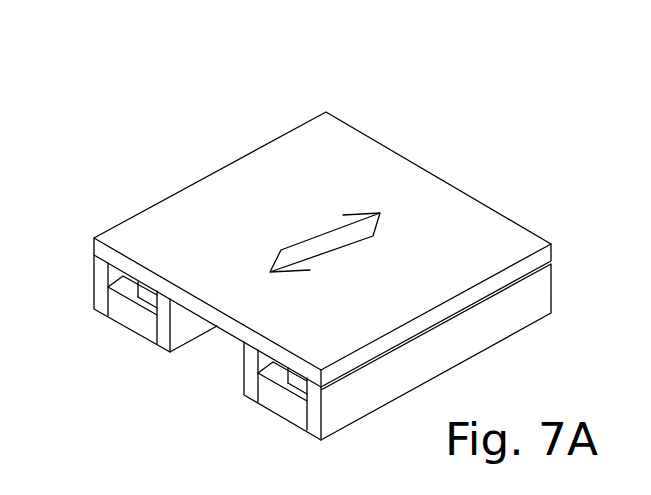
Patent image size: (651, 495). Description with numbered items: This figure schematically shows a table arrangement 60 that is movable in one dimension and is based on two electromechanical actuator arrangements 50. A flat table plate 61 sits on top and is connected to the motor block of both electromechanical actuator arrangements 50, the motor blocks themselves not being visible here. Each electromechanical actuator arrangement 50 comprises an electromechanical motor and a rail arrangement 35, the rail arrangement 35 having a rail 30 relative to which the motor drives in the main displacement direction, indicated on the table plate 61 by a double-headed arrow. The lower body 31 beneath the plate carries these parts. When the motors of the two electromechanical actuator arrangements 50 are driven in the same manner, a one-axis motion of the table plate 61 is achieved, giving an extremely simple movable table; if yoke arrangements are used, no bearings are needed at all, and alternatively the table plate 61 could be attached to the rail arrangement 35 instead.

The table arrangement 60 is at (200, 118).
The table plate 61 is at (180, 217).
The rail 30 is at (168, 300).
The base body 31 is at (362, 398).
The rail arrangement 35 is at (120, 315).
The electromechanical actuator arrangement 50 is at (102, 303).